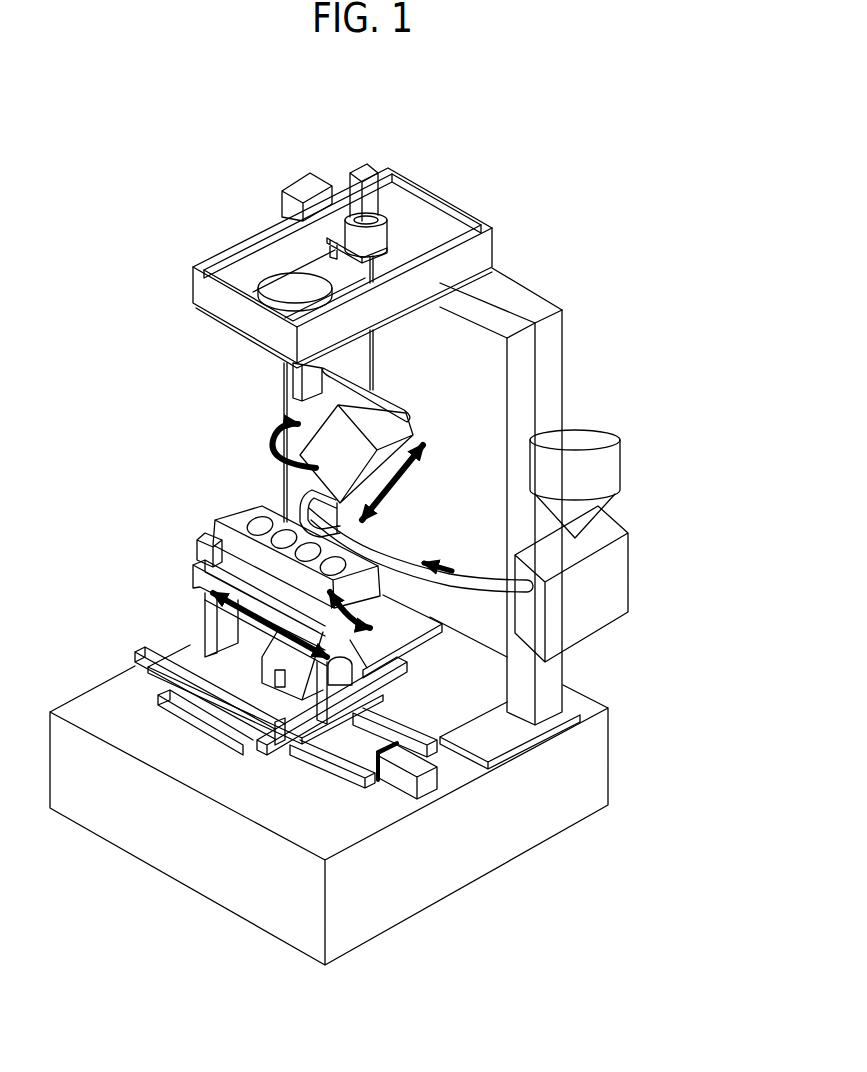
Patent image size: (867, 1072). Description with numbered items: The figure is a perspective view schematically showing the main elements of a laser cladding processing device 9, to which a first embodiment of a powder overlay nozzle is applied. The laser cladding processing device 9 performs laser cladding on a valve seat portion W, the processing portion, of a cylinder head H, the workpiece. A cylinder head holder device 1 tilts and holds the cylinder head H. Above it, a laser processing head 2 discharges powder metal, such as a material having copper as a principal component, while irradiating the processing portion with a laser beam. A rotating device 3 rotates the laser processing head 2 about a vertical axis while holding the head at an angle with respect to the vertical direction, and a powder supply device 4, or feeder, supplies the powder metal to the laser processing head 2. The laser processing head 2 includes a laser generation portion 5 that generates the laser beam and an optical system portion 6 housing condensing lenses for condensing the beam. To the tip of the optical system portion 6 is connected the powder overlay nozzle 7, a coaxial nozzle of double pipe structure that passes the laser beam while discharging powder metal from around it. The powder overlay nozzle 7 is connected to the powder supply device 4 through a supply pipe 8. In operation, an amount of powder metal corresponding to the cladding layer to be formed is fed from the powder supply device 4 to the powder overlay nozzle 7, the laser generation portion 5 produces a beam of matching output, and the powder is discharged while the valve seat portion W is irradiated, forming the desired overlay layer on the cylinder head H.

The cylinder head holder device 1 is at (180, 612).
The laser processing head 2 is at (313, 477).
The rotating device 3 is at (203, 240).
The powder supply device 4 is at (653, 562).
The laser generation portion 5 is at (417, 422).
The optical system portion 6 is at (330, 508).
The powder overlay nozzle 7 is at (300, 500).
The supply pipe 8 is at (478, 580).
The laser cladding processing device 9 is at (514, 157).
The valve seat portion W is at (247, 512).
The cylinder head H is at (198, 538).